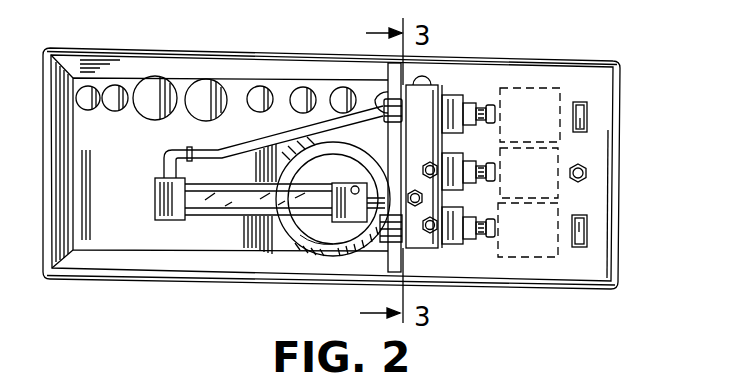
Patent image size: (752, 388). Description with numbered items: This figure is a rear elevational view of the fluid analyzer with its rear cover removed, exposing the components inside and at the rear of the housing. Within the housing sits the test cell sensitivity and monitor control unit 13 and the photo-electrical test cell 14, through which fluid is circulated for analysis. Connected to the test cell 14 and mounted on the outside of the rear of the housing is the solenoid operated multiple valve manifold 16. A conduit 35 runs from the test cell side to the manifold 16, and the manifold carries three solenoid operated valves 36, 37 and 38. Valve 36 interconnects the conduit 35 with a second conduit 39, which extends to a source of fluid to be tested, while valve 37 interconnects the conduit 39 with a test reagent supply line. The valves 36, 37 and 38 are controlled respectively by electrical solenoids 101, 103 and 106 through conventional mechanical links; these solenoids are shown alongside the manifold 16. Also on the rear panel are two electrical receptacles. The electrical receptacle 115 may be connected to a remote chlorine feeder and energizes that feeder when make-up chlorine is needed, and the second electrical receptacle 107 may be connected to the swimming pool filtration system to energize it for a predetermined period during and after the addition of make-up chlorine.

The test cell sensitivity and monitor control unit 13 is at (127, 179).
The photo-electrical test cell 14 is at (164, 223).
The solenoid operated multiple valve manifold 16 is at (442, 78).
The conduit 35 is at (288, 132).
The solenoid operated valve 36 is at (457, 96).
The solenoid operated valve 37 is at (466, 154).
The solenoid operated valve 38 is at (466, 210).
The second conduit 39 is at (402, 101).
The electrical solenoid 101 is at (564, 80).
The electrical solenoid 103 is at (559, 149).
The electrical solenoid 106 is at (558, 204).
The second electrical receptacle 107 is at (588, 119).
The electrical receptacle 115 is at (588, 232).